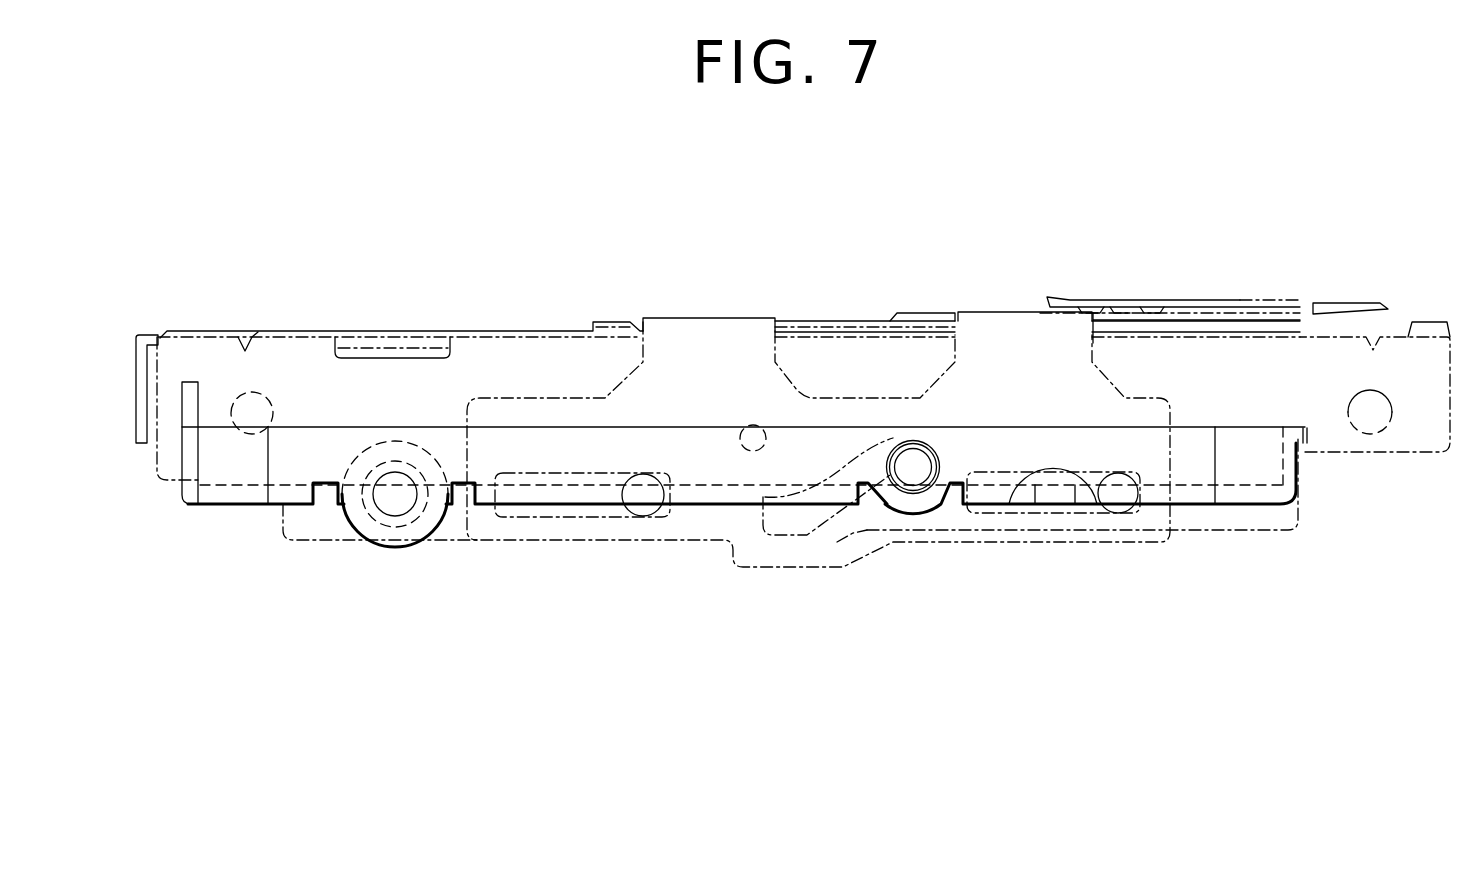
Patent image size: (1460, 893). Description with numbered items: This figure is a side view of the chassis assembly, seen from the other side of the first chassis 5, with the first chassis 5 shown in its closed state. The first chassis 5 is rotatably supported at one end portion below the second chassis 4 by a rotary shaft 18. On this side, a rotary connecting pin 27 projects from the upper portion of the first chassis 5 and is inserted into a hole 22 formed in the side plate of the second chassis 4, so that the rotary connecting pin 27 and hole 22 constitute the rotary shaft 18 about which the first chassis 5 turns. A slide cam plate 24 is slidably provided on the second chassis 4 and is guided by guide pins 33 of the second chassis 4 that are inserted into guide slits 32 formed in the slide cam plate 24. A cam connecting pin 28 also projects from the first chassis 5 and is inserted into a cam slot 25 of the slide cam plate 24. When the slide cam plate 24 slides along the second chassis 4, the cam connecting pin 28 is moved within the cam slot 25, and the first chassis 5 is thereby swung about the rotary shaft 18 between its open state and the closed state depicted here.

The second chassis 4 is at (225, 328).
The first chassis 5 is at (211, 516).
The rotary shaft 18 is at (401, 528).
The hole 22 is at (385, 512).
The slide cam plate 24 is at (707, 345).
The cam slot 25 is at (832, 517).
The rotary connecting pin 27 is at (402, 512).
The cam connecting pin 28 is at (920, 473).
The guide slit 32 is at (578, 510).
The guide pin 33 is at (648, 512).